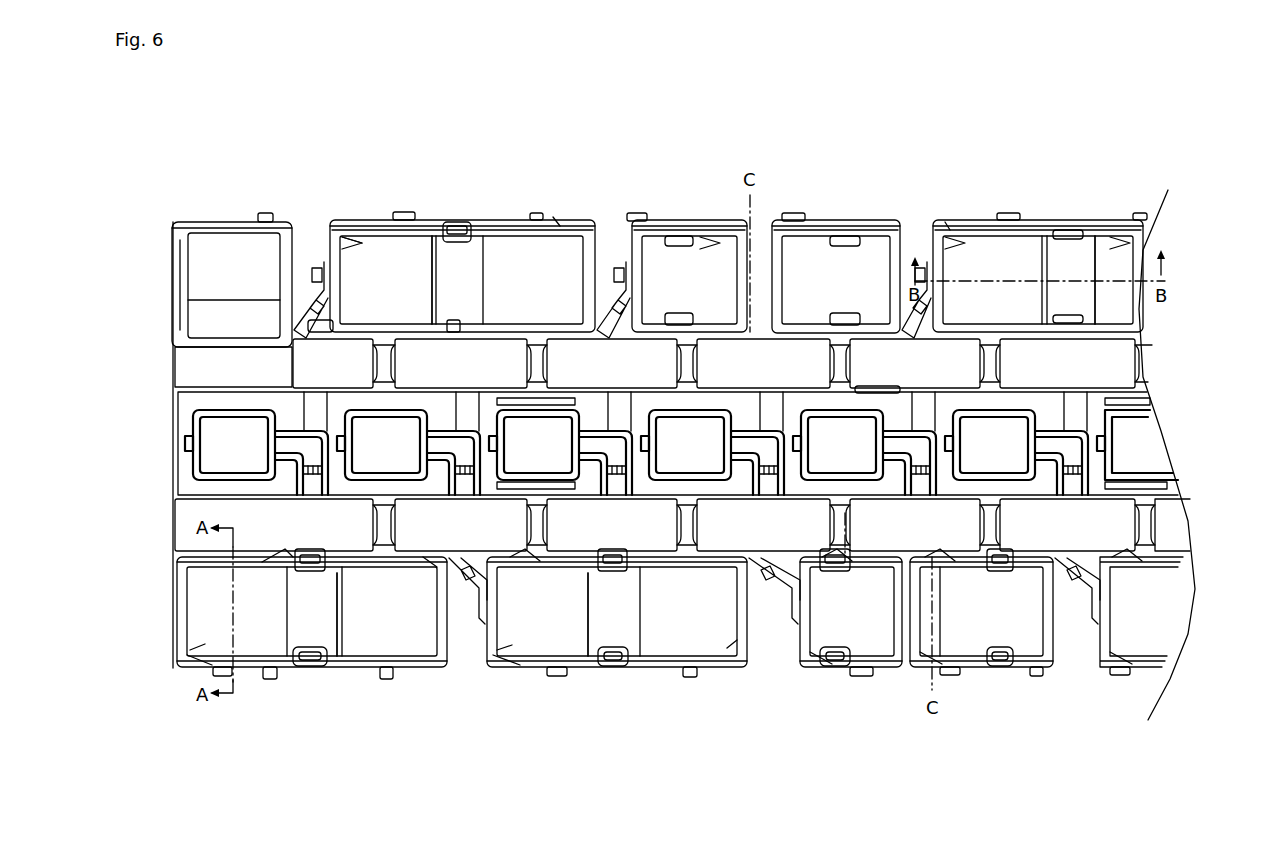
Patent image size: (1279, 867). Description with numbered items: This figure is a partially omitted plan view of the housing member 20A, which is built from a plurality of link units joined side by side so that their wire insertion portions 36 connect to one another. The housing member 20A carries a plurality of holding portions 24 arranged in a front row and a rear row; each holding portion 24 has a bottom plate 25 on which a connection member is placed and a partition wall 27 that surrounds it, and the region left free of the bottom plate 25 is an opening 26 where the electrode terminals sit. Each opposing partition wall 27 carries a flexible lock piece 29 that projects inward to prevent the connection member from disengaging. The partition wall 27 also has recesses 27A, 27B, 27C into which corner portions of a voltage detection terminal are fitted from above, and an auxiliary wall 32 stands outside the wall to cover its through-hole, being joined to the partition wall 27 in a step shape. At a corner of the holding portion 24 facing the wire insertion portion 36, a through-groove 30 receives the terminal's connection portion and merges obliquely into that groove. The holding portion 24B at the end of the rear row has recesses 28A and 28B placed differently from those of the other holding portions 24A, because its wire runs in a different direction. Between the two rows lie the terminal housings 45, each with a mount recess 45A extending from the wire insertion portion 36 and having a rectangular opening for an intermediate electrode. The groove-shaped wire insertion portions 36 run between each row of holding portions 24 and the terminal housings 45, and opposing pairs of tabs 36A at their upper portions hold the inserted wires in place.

The housing member 20A is at (905, 170).
The holding portion 24 is at (680, 438).
The holding portion 24A is at (455, 207).
The holding portion 24B is at (310, 684).
The bottom plate 25 is at (443, 243).
The opening 26 is at (340, 237).
The partition wall 27 is at (360, 227).
The recess 27A is at (378, 228).
The recess 27B is at (327, 273).
The recess 27C is at (367, 330).
The recess 28A is at (256, 668).
The recess 28B is at (228, 564).
The lock piece 29 is at (482, 220).
The through-groove 30 is at (306, 330).
The auxiliary wall 32 is at (398, 216).
The wire insertion portion 36 is at (313, 363).
The tab 36A is at (697, 542).
The terminal housing portion 45 is at (357, 398).
The mount recess 45A is at (283, 446).